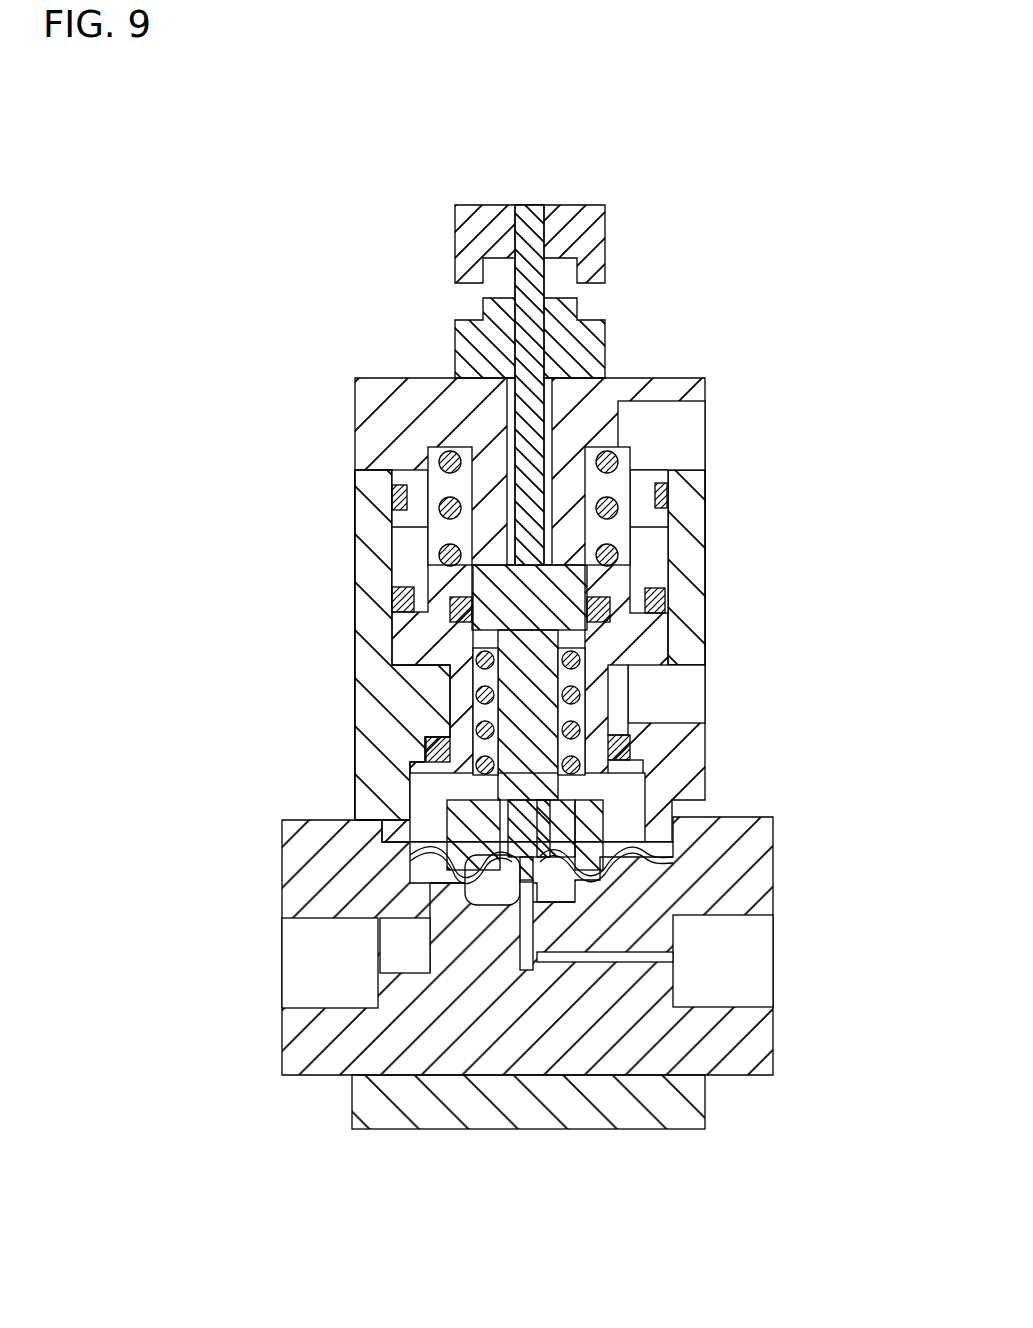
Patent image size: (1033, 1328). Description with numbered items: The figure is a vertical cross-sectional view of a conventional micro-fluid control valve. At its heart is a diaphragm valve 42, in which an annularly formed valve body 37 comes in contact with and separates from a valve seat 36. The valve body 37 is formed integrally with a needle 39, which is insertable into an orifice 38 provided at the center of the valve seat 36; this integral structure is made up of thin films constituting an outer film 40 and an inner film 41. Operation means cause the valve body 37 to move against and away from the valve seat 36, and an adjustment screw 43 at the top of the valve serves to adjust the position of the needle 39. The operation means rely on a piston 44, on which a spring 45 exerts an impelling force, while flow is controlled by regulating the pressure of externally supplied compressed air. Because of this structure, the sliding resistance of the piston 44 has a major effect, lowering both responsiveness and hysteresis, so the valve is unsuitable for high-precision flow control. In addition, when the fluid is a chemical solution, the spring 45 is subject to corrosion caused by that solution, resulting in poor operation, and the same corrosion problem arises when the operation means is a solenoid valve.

The valve seat 36 is at (575, 882).
The valve body 37 is at (465, 858).
The orifice 38 is at (526, 930).
The needle 39 is at (480, 925).
The outer film 40 is at (648, 845).
The inner film 41 is at (600, 835).
The diaphragm valve 42 is at (542, 900).
The adjustment screw 43 is at (533, 205).
The piston 44 is at (630, 580).
The spring 45 is at (625, 447).